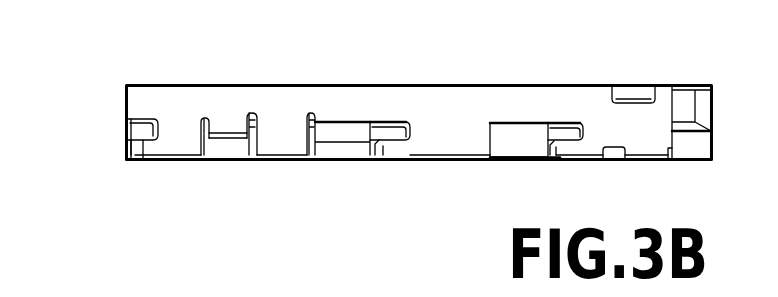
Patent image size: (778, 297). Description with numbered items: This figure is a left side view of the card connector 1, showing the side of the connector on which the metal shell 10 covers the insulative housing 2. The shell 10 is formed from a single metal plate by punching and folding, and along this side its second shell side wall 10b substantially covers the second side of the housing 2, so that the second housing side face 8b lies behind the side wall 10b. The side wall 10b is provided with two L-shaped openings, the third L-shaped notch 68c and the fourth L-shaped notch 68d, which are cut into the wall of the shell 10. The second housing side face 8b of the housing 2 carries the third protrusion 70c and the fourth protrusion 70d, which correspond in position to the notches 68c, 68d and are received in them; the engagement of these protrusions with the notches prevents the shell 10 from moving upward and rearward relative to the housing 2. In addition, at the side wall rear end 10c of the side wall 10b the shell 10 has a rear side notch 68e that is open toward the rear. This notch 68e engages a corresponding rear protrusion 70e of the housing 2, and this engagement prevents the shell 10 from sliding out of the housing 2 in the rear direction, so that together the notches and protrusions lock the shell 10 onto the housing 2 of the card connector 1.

The card connector 1 is at (531, 50).
The insulative housing 2 is at (227, 149).
The second housing side face 8b is at (517, 142).
The metal shell 10 is at (455, 104).
The second shell side wall 10b is at (282, 105).
The side wall rear end 10c is at (137, 103).
The third L-shaped notch 68c is at (536, 122).
The fourth L-shaped notch 68d is at (362, 121).
The rear side notch 68e is at (140, 143).
The third protrusion 70c is at (562, 133).
The fourth protrusion 70d is at (393, 133).
The rear protrusion 70e is at (136, 129).